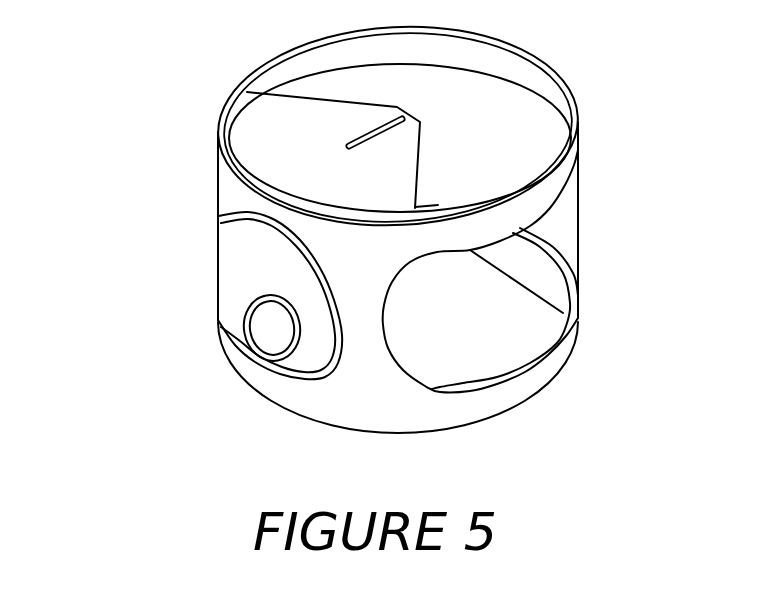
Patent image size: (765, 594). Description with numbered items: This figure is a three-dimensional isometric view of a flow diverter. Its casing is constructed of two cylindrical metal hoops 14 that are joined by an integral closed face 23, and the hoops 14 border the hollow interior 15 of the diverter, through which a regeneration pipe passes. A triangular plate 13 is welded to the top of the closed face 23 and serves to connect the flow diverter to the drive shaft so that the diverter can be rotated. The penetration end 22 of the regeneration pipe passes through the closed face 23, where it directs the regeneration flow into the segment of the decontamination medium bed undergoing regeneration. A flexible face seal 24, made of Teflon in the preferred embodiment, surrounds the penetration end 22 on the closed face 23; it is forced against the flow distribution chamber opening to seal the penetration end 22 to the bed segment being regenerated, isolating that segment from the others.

The triangular plate 13 is at (283, 128).
The metal hoops 14 is at (545, 70).
The hollow interior 15 is at (481, 334).
The penetration end 22 is at (270, 334).
The closed face 23 is at (255, 260).
The flexible face seal 24 is at (307, 378).